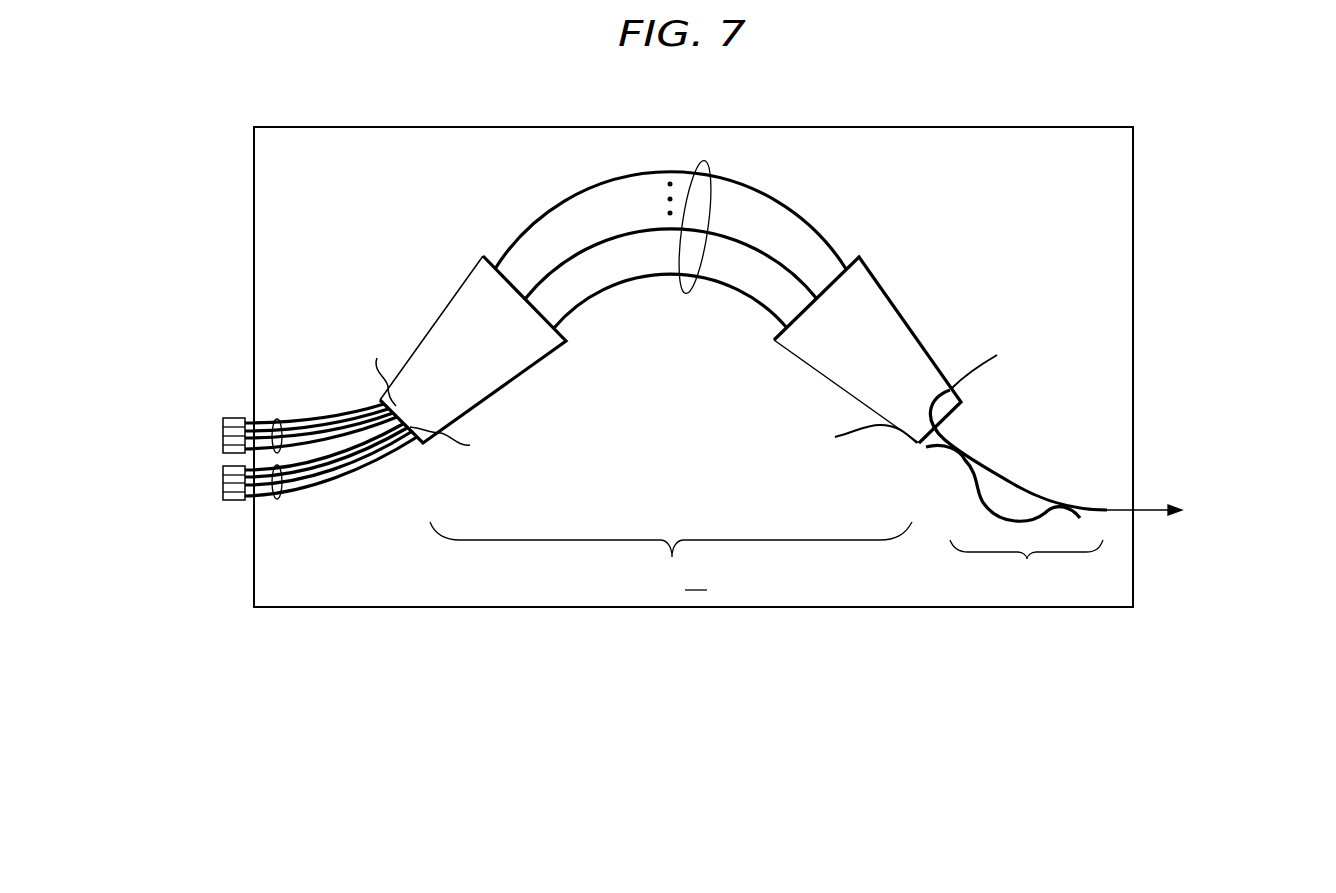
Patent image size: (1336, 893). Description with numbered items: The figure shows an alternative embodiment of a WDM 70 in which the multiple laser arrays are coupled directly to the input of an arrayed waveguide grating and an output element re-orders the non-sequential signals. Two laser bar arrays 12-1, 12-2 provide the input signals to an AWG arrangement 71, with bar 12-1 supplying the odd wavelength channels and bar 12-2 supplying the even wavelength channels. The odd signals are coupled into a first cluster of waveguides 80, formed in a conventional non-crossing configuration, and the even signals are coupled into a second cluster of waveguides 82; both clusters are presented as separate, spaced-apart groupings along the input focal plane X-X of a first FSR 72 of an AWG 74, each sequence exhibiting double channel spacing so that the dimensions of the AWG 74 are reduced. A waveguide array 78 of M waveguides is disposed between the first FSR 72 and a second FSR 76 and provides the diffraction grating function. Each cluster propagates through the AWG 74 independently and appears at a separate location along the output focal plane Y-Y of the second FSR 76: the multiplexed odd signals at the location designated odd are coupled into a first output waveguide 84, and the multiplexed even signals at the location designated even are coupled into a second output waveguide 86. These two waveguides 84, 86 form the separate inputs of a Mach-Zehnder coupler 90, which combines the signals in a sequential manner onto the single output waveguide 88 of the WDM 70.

The WDM 70 is at (386, 103).
The AWG arrangement 71 is at (1118, 150).
The laser bar array 12-1 is at (222, 436).
The laser bar array 12-2 is at (222, 483).
The first cluster of waveguides 80 is at (277, 419).
The second cluster of waveguides 82 is at (277, 500).
The AWG 74 is at (702, 376).
The first FSR 72 is at (468, 292).
The second FSR 76 is at (877, 308).
The waveguide array 78 is at (686, 293).
The first output waveguide 84 is at (936, 453).
The second output waveguide 86 is at (970, 443).
The single output waveguide 88 is at (1106, 505).
The Mach-Zehnder coupler 90 is at (1106, 491).